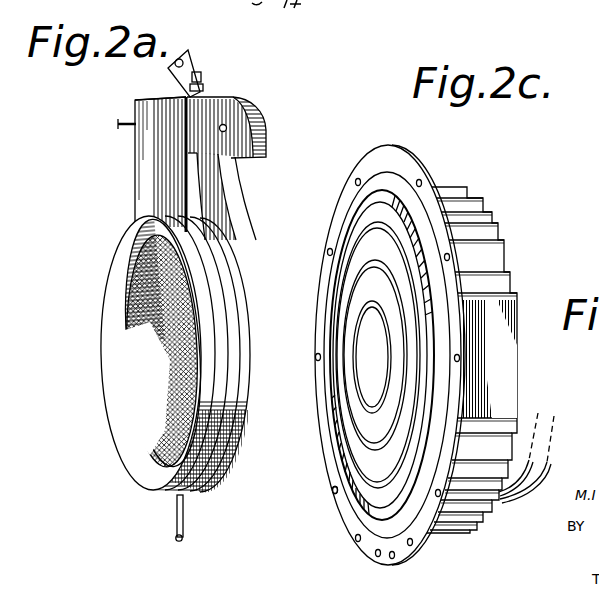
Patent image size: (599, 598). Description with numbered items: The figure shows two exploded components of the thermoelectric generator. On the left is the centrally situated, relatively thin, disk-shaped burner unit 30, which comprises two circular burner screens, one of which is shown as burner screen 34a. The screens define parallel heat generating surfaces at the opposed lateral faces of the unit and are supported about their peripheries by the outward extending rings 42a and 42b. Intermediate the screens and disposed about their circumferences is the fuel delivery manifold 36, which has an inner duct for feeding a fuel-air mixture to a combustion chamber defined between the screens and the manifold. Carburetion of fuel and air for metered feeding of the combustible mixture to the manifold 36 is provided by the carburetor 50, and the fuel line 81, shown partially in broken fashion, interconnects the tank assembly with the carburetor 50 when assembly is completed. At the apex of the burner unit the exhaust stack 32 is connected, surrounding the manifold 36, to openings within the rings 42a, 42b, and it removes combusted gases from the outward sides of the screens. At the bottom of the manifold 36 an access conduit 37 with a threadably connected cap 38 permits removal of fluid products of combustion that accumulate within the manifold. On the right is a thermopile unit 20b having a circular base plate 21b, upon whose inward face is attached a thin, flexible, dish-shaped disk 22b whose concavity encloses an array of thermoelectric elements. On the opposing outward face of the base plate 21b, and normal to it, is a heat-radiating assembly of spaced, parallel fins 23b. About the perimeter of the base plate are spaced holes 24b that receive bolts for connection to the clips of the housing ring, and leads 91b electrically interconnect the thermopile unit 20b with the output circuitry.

In FIG. 2A, the burner unit 30 is at (125, 215).
In FIG. 2A, the exhaust stack 32 is at (137, 110).
In FIG. 2A, the fuel line 81 is at (123, 128).
In FIG. 2A, the carburetor 50 is at (318, 122).
In FIG. 2A, the fuel delivery manifold 36 is at (222, 218).
In FIG. 2A, the burner screen 34a is at (135, 294).
In FIG. 2A, the ring 42a is at (103, 392).
In FIG. 2A, the ring 42b is at (248, 288).
In FIG. 2A, the access conduit 37 is at (176, 517).
In FIG. 2A, the cap 38 is at (186, 539).
In FIG. 2C, the thermopile unit 20b is at (522, 179).
In FIG. 2C, the base plate 21b is at (387, 158).
In FIG. 2C, the dish-shaped disk 22b is at (355, 223).
In FIG. 2C, the fins 23b is at (485, 203).
In FIG. 2C, the holes 24b is at (333, 492).
In FIG. 2C, the leads 91b is at (530, 488).